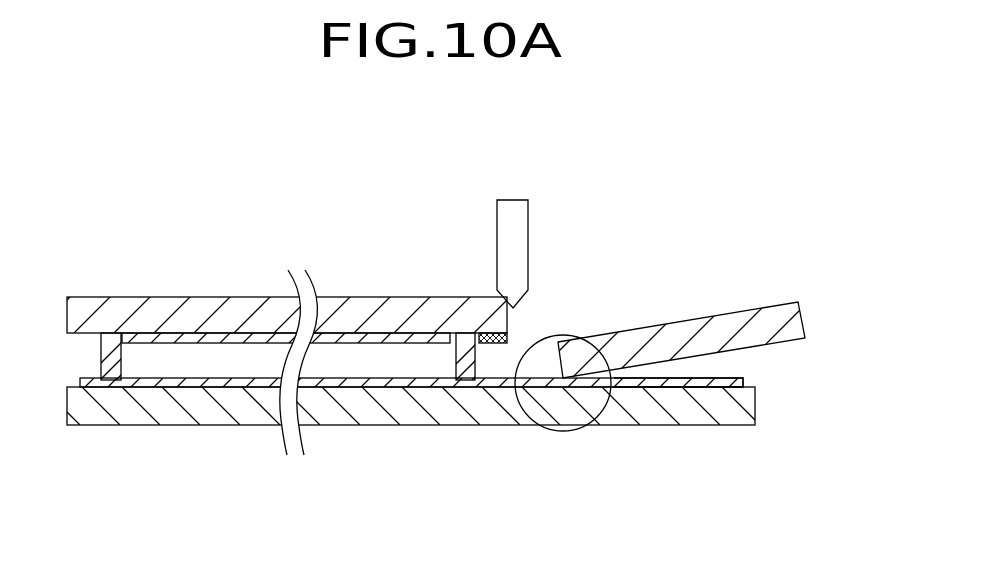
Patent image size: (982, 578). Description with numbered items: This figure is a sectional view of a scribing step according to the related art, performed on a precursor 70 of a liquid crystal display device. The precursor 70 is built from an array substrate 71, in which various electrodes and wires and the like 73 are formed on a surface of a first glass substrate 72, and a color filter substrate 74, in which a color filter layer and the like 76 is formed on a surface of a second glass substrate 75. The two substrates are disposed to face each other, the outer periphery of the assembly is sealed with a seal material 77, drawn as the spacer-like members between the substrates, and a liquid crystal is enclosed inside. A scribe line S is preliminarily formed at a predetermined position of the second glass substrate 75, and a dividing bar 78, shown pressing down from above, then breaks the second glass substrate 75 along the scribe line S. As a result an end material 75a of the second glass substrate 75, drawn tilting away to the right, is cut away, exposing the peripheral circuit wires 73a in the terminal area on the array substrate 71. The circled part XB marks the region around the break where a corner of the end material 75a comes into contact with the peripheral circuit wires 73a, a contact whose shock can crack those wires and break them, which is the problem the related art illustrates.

The precursor of a liquid crystal display device 70 is at (73, 178).
The array substrate 71 is at (500, 425).
The first glass substrate 72 is at (235, 412).
The electrodes and wires 73 is at (372, 383).
The peripheral circuit wires 73a is at (693, 385).
The color filter substrate 74 is at (292, 337).
The second glass substrate 75 is at (145, 313).
The end material 75a is at (660, 347).
The color filter layer 76 is at (230, 338).
The seal material 77 is at (112, 370).
The dividing bar 78 is at (508, 220).
The scribe line S is at (560, 335).
The part XB is at (580, 430).